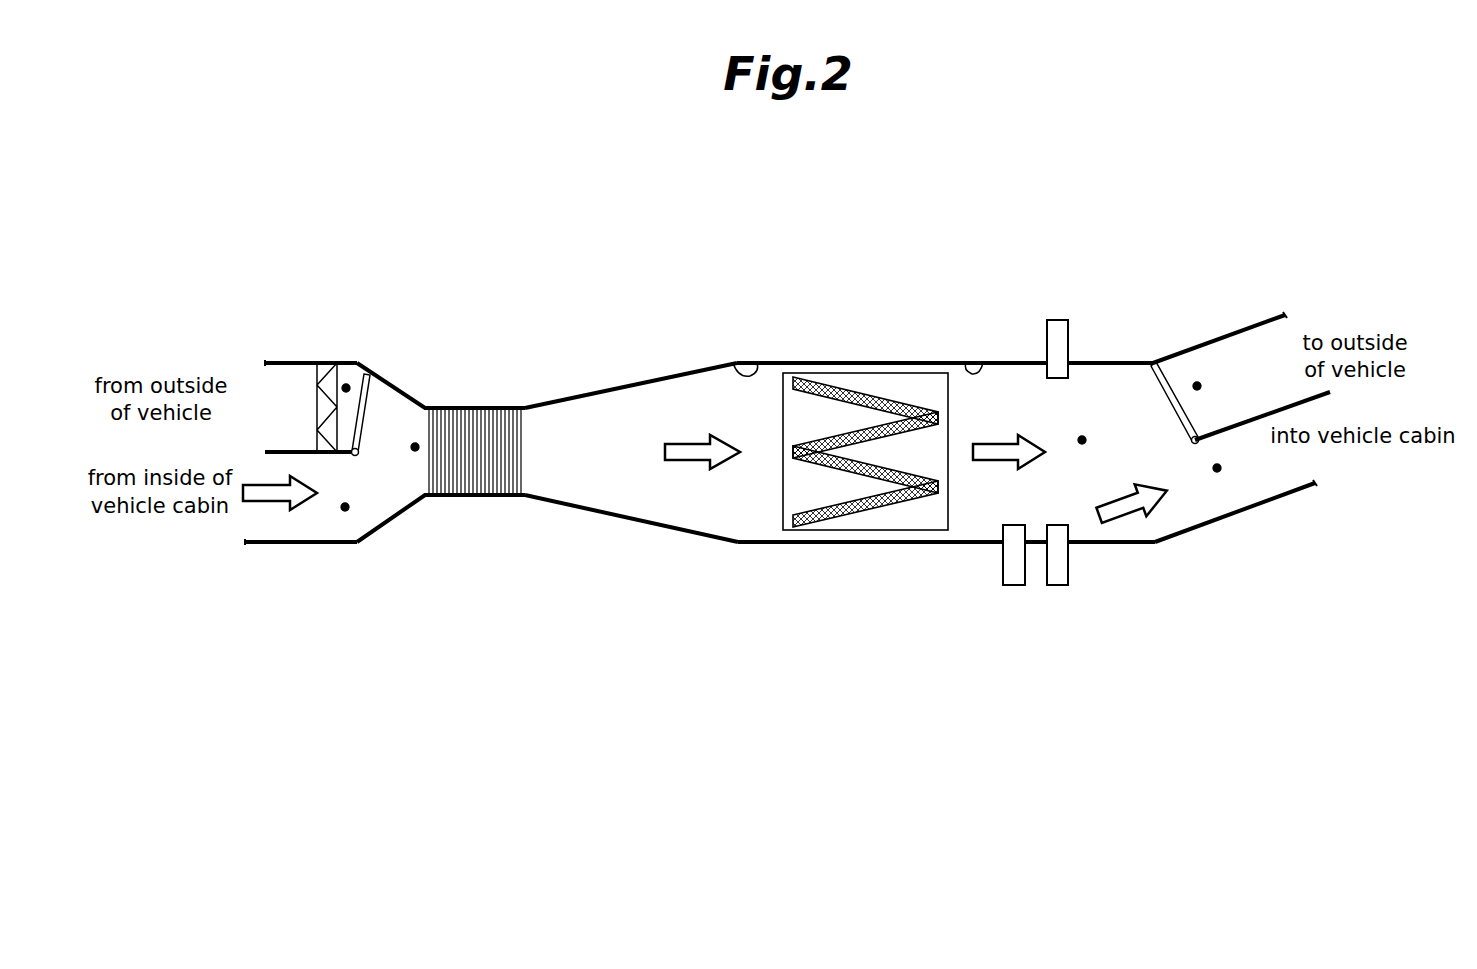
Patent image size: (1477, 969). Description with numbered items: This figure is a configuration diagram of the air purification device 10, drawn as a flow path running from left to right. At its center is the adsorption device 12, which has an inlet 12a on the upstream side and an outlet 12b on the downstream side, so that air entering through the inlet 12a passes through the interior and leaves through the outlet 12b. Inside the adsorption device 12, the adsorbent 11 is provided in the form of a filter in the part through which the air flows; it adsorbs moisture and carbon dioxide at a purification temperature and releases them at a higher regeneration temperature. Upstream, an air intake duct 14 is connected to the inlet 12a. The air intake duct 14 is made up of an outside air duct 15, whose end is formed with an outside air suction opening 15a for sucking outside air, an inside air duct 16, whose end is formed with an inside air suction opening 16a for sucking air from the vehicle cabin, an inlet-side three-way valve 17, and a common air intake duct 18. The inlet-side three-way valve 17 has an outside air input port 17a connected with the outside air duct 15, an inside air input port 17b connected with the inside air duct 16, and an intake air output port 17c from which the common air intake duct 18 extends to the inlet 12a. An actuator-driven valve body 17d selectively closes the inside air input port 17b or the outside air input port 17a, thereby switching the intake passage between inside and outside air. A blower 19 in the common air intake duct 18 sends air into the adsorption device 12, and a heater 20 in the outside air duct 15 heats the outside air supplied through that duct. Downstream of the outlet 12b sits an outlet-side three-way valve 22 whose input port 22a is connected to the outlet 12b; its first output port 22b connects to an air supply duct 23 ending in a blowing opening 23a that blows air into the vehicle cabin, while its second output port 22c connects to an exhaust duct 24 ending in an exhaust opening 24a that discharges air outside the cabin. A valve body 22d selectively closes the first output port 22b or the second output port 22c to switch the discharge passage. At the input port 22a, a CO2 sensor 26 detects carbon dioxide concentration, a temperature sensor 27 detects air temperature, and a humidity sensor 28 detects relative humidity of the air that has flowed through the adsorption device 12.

The air purification device 10 is at (977, 249).
The adsorbent 11 is at (865, 530).
The adsorption device 12 is at (866, 363).
The inlet 12a is at (735, 363).
The outlet 12b is at (983, 362).
The air intake duct 14 is at (540, 409).
The outside air duct 15 is at (295, 363).
The outside air suction opening 15a is at (265, 363).
The inside air duct 16 is at (283, 542).
The inside air suction opening 16a is at (245, 542).
The inlet-side three-way valve 17 is at (393, 379).
The outside air input port 17a is at (346, 388).
The inside air input port 17b is at (345, 507).
The intake air output port 17c is at (415, 447).
The valve body 17d is at (363, 427).
The common air intake duct 18 is at (628, 521).
The blower 19 is at (478, 425).
The heater 20 is at (327, 365).
The outlet-side three-way valve 22 is at (1127, 364).
The input port 22a is at (1082, 440).
The first output port 22b is at (1217, 468).
The second output port 22c is at (1197, 386).
The valve body 22d is at (1180, 418).
The air supply duct 23 is at (1260, 503).
The blowing opening 23a is at (1315, 483).
The exhaust duct 24 is at (1250, 327).
The exhaust opening 24a is at (1285, 315).
The CO2 sensor 26 is at (1057, 330).
The temperature sensor 27 is at (1013, 585).
The humidity sensor 28 is at (1058, 585).